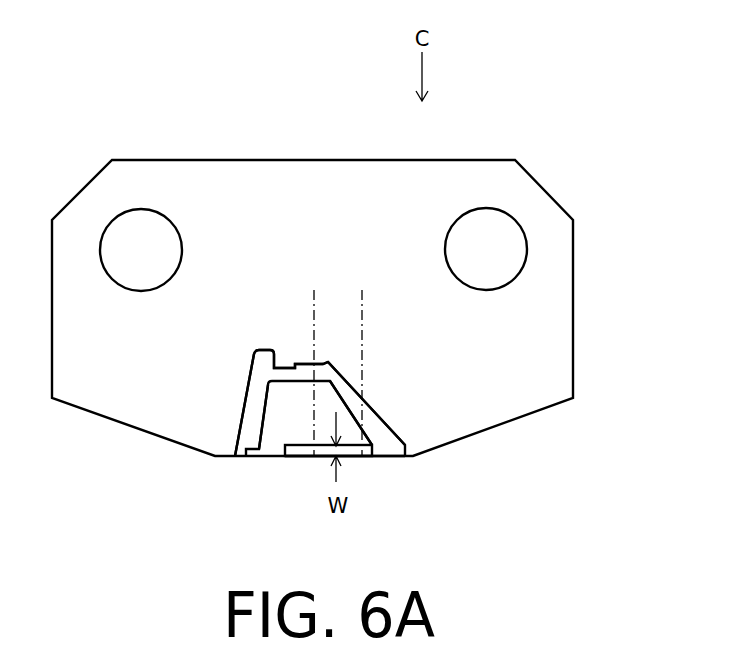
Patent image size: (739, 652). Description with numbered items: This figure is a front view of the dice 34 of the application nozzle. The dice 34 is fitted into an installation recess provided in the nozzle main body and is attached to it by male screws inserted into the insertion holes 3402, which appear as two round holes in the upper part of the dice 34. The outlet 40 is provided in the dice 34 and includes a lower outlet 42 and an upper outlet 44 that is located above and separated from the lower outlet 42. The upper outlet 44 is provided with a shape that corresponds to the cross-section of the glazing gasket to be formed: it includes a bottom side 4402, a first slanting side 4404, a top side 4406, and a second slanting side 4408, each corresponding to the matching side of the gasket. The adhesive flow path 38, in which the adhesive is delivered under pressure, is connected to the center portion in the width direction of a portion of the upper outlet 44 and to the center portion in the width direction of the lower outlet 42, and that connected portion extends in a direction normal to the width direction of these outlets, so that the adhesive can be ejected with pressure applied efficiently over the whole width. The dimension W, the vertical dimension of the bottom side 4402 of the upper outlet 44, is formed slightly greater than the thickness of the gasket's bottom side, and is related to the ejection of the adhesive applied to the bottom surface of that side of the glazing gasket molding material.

The dice 34 is at (525, 133).
The insertion holes 3402 is at (146, 210).
The adhesive flow path 38 is at (365, 297).
The outlet 40 is at (411, 414).
The lower outlet 42 is at (390, 463).
The upper outlet 44 is at (414, 436).
The bottom side 4402 is at (302, 446).
The first slanting side 4404 is at (366, 400).
The top side 4406 is at (288, 362).
The second slanting side 4408 is at (247, 413).